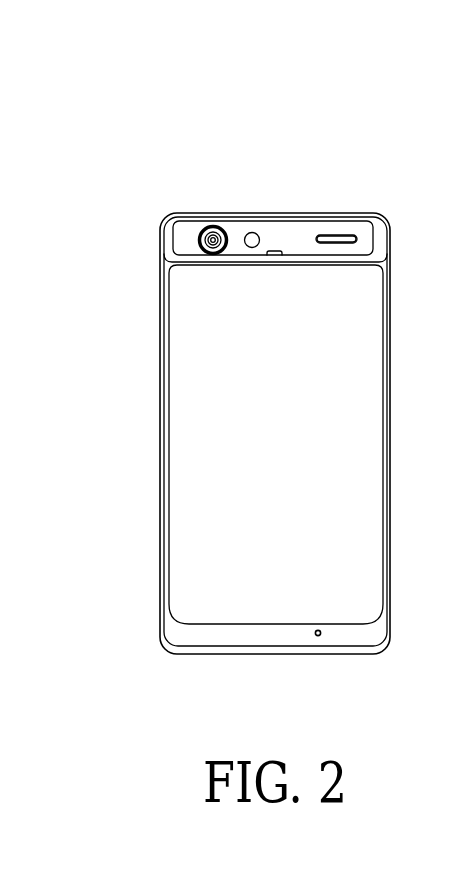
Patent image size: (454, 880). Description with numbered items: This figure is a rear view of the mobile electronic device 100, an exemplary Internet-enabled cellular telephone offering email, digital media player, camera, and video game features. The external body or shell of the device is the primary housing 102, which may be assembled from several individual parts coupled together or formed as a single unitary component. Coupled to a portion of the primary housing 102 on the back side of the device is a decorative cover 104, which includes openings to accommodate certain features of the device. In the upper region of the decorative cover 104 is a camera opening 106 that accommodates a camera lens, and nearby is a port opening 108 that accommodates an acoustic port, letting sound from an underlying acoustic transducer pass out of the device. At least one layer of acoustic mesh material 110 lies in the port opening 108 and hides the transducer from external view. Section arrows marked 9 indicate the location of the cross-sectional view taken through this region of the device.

The mobile electronic device 100 is at (101, 265).
The primary housing 102 is at (390, 256).
The decorative cover 104 is at (273, 232).
The camera opening 106 is at (215, 233).
The port opening 108 is at (342, 238).
The acoustic mesh material 110 is at (349, 238).
The section line 9- 9 is at (335, 82).